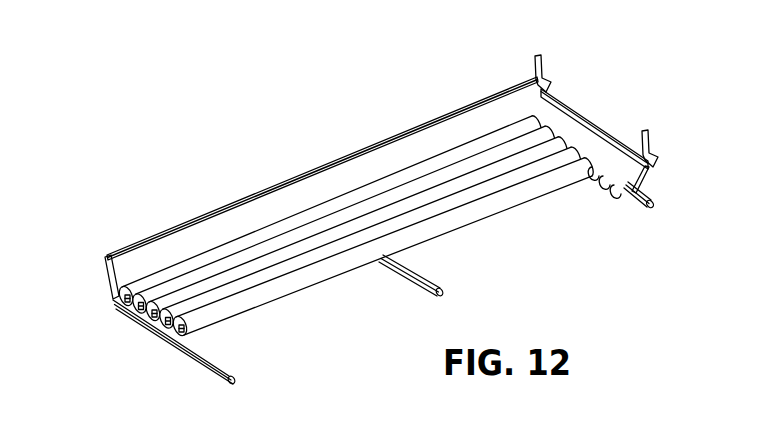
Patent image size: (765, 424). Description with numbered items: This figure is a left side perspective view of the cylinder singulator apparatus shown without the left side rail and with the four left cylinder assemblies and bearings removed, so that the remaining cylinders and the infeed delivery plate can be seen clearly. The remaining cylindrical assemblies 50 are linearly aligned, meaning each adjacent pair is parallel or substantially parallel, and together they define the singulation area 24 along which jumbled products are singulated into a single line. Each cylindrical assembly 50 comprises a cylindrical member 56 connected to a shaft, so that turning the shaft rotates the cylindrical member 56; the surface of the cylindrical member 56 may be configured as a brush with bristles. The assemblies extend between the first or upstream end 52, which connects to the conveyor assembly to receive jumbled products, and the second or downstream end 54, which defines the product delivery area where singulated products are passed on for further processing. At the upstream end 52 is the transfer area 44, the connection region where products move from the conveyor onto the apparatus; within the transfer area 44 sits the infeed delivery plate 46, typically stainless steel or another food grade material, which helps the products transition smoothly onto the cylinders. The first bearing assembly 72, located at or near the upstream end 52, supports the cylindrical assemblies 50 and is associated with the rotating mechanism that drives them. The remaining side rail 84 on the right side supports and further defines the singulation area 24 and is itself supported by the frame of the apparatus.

The singulation area 24 is at (345, 145).
The transfer area 44 is at (611, 121).
The infeed delivery plate 46 is at (558, 118).
The cylindrical assemblies 50 is at (297, 282).
The first or upstream end 52 is at (528, 66).
The second or downstream end 54 is at (97, 245).
The cylindrical member 56 is at (468, 215).
The first bearing assembly 72 is at (146, 321).
The side rails 84 is at (257, 197).